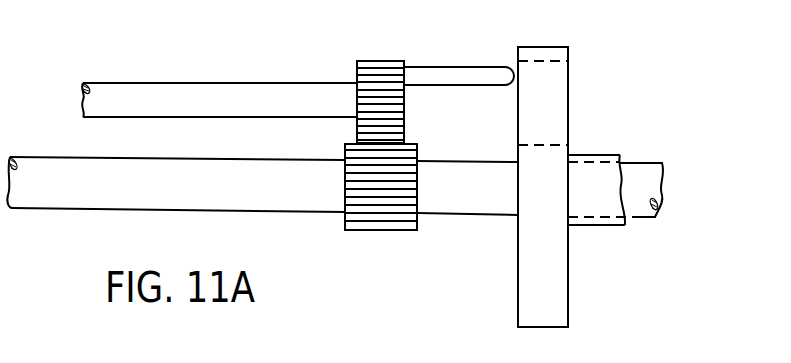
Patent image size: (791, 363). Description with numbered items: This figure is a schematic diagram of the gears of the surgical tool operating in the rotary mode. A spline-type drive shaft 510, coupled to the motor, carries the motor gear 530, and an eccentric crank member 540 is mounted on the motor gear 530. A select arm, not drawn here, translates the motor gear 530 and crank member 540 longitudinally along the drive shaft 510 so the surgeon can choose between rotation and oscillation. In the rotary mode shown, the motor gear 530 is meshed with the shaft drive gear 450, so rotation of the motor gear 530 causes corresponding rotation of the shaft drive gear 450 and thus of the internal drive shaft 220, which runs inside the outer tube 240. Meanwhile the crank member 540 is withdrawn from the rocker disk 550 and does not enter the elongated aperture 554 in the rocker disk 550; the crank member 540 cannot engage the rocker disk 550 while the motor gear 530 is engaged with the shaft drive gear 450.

The drive shaft 510 is at (142, 95).
The motor gear 530 is at (384, 60).
The crank member 540 is at (460, 65).
The shaft drive gear 450 is at (373, 232).
The drive shaft 220 is at (647, 220).
The outer tube 240 is at (600, 227).
The rocker disk 550 is at (550, 312).
The elongated aperture 554 is at (572, 120).